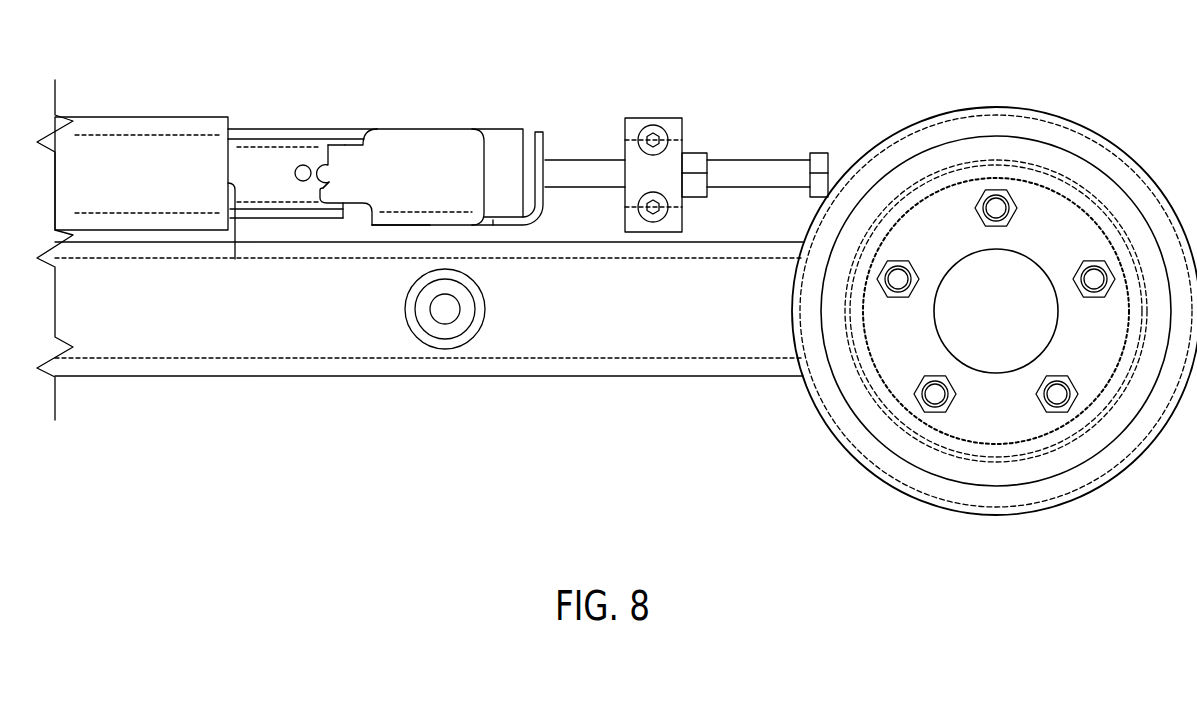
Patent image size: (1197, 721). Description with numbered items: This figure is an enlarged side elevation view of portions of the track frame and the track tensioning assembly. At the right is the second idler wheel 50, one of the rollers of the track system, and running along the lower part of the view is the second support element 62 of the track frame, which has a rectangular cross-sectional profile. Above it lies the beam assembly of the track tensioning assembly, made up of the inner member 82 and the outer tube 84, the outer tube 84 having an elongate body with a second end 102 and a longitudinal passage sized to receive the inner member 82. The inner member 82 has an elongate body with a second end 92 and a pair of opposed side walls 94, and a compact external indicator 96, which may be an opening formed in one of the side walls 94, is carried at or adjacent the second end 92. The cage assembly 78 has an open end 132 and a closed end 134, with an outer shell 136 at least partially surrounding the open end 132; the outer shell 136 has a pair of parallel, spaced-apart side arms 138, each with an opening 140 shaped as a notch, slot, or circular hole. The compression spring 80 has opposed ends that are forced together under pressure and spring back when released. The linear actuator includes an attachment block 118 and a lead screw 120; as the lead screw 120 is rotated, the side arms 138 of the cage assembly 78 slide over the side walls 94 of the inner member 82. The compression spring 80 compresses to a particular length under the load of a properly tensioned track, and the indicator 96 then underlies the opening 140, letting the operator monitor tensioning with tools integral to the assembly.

The second idler wheel 50 is at (1053, 483).
The second support element 62 is at (562, 338).
The cage assembly 78 is at (402, 243).
The compression spring 80 is at (503, 129).
The inner member 82 is at (258, 129).
The outer tube 84 is at (142, 117).
The second end 92 is at (340, 145).
The side walls 94 is at (272, 177).
The external indicator 96 is at (298, 165).
The second end 102 is at (235, 259).
The attachment block 118 is at (658, 118).
The lead screw 120 is at (583, 160).
The open end 132 is at (322, 185).
The closed end 134 is at (545, 203).
The outer shell 136 is at (438, 145).
The side arms 138 is at (357, 145).
The opening 140 is at (336, 144).